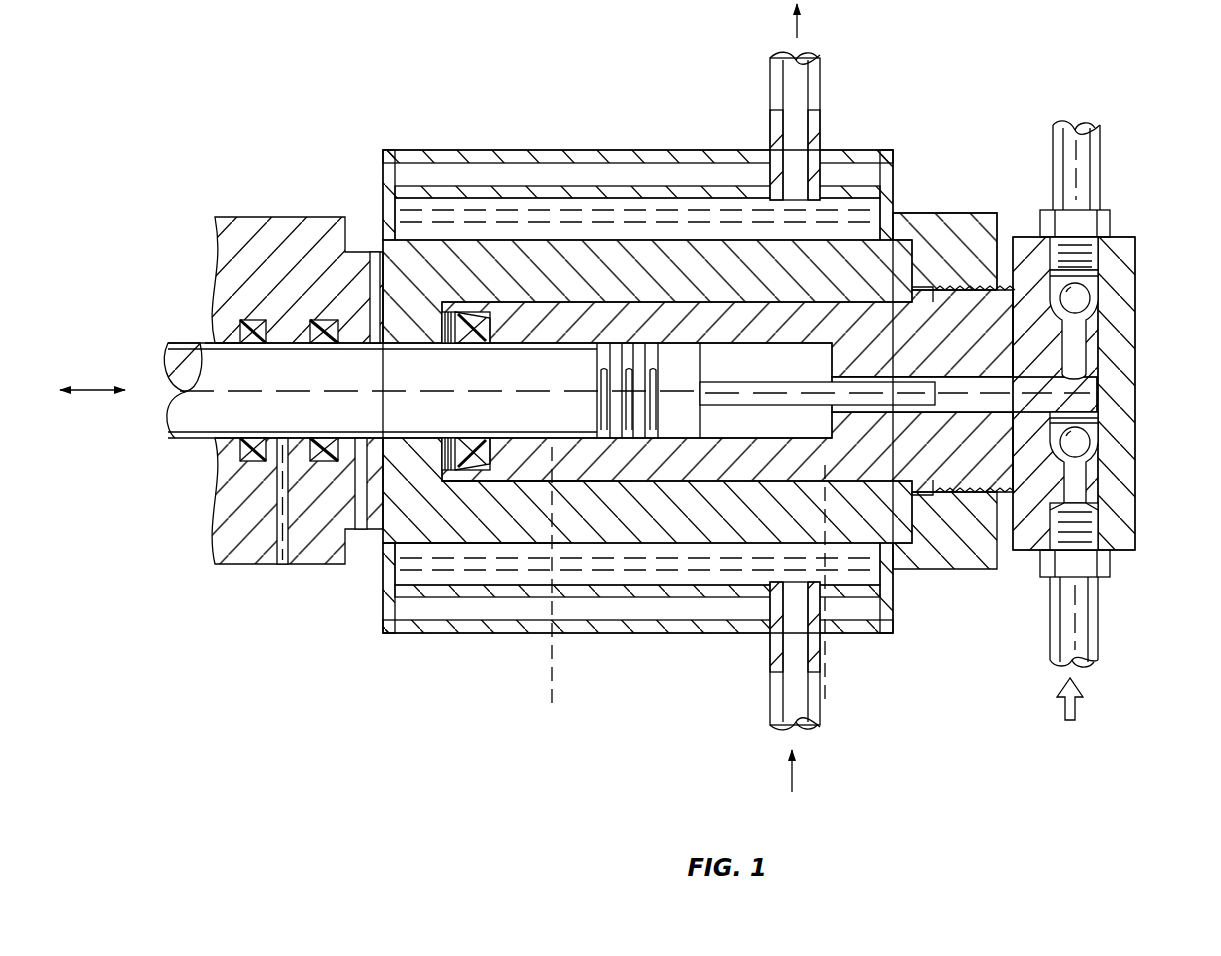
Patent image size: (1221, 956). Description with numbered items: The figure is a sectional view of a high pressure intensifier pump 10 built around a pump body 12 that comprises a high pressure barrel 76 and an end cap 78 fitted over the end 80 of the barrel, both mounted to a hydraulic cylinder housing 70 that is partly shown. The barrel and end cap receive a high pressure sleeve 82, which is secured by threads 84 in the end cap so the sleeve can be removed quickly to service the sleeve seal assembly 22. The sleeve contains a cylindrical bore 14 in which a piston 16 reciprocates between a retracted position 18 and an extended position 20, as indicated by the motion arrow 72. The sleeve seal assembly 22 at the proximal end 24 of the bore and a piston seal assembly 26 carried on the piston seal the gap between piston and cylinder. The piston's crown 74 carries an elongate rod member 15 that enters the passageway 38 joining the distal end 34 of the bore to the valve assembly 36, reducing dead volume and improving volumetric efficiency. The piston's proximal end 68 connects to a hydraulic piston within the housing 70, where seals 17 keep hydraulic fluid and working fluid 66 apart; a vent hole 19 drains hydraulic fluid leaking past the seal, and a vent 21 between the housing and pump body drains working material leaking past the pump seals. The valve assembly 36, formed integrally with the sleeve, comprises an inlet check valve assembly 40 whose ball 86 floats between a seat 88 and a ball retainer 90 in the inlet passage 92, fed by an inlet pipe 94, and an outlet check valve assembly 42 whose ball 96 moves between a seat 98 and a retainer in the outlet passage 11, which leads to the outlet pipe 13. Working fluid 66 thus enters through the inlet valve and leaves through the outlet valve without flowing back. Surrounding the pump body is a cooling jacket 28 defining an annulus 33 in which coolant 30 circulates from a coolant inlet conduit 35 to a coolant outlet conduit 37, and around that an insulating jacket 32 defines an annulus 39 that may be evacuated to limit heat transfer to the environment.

The high pressure intensifier pump 10 is at (180, 114).
The outlet passage 11 is at (1133, 250).
The pump body 12 is at (990, 210).
The outlet pipe 13 is at (1100, 152).
The cylindrical bore 14 is at (805, 440).
The rod member 15 is at (895, 412).
The piston 16 is at (165, 427).
The seals 17 is at (324, 318).
The retracted position 18 is at (556, 703).
The vent hole 19 is at (283, 566).
The extended position 20 is at (832, 703).
The vent 21 is at (360, 529).
The sleeve seal assembly 22 is at (468, 346).
The proximal end 24 is at (438, 450).
The piston seal assembly 26 is at (592, 372).
The cooling jacket 28 is at (453, 240).
The coolant 30 is at (800, 22).
The insulating jacket 32 is at (538, 150).
The annulus 33 is at (502, 230).
The distal end 34 is at (834, 345).
The coolant inlet conduit 35 is at (768, 696).
The valve assembly 36 is at (1125, 236).
The coolant outlet conduit 37 is at (823, 90).
The passageway 38 is at (992, 368).
The annulus 39 is at (641, 190).
The inlet check valve assembly 40 is at (1092, 486).
The outlet check valve assembly 42 is at (1097, 275).
The working fluid 66 is at (1077, 712).
The proximal end 68 is at (212, 340).
The hydraulic cylinder housing 70 is at (294, 217).
The reciprocation arrow 72 is at (95, 388).
The crown 74 is at (705, 436).
The high pressure barrel 76 is at (445, 544).
The end cap 78 is at (985, 570).
The end 80 is at (935, 250).
The high pressure sleeve 82 is at (515, 482).
The threads 84 is at (950, 500).
The ball 86 is at (1090, 440).
The seat 88 is at (1090, 462).
The ball retainer 90 is at (1088, 416).
The inlet passage 92 is at (1137, 377).
The inlet pipe 94 is at (1100, 608).
The ball 96 is at (1090, 292).
The seat 98 is at (1090, 315).